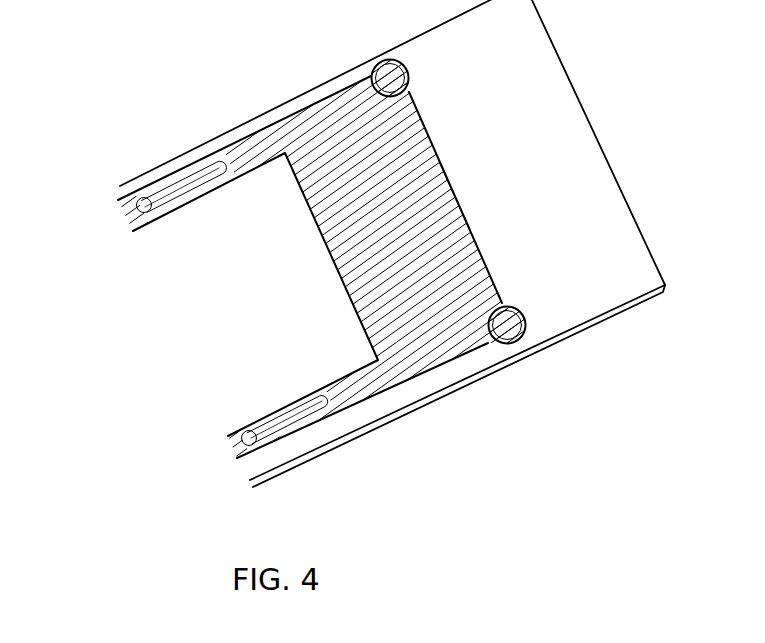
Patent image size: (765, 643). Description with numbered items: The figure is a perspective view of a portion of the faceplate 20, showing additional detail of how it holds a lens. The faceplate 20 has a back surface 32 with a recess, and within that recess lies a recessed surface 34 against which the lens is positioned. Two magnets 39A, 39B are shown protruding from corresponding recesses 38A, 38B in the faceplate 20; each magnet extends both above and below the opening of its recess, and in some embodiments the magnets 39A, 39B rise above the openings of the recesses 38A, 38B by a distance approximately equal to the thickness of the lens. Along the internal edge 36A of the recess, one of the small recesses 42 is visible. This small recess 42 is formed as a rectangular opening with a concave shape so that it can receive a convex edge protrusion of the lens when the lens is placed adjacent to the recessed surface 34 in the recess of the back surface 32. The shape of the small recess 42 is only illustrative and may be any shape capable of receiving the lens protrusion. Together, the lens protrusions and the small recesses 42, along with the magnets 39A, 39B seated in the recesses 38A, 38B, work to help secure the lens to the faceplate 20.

The faceplate 20 is at (238, 103).
The back surface 32 is at (580, 152).
The recessed surface 34 is at (440, 287).
The internal edge 36A is at (490, 268).
The recess 38A is at (318, 404).
The recess 38B is at (145, 196).
The magnet 39A is at (298, 412).
The magnet 39B is at (187, 185).
The small recess 42 is at (457, 195).